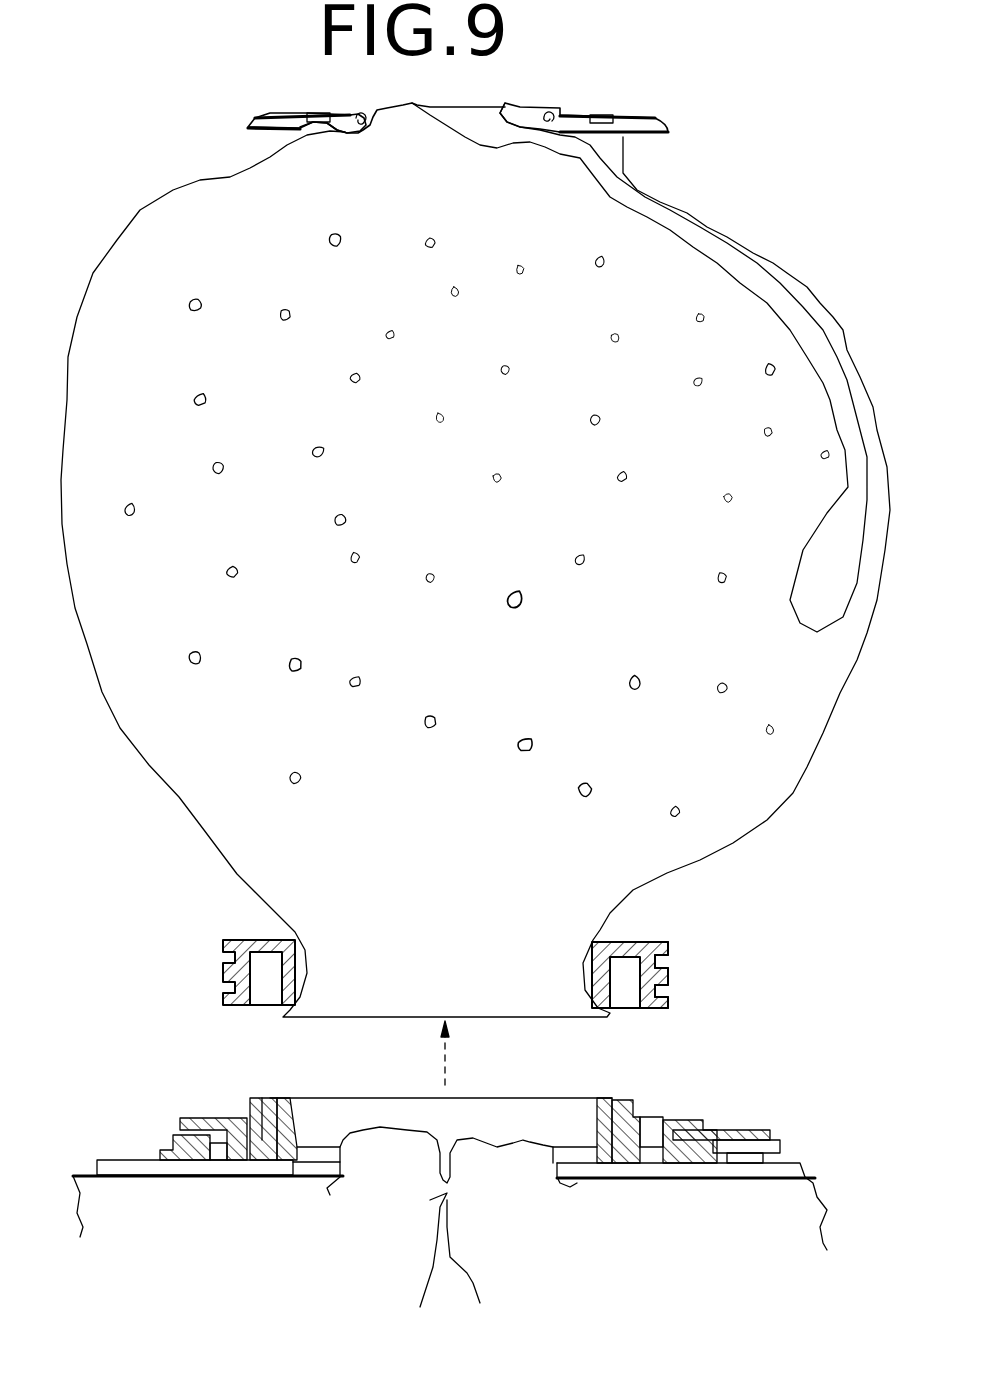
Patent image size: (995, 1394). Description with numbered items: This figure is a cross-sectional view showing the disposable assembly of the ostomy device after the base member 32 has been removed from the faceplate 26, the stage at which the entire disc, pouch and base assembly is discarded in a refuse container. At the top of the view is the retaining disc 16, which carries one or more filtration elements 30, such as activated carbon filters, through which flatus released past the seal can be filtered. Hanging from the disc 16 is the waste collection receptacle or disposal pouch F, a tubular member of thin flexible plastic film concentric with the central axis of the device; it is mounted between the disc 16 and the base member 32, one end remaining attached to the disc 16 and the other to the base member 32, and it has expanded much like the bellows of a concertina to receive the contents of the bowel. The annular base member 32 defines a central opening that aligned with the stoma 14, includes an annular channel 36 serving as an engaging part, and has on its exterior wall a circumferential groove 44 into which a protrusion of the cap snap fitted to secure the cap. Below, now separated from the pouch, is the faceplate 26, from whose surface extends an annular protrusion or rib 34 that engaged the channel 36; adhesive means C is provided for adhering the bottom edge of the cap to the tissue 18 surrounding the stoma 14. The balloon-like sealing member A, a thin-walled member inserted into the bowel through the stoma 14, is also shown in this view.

The stoma 14 is at (523, 1140).
The retaining disc 16 is at (285, 124).
The tissue 18 is at (215, 1197).
The faceplate 26 is at (192, 1150).
The filtration elements 30 is at (320, 113).
The base member 32 is at (686, 954).
The annular protrusion or rib 34 is at (633, 1127).
The annular channel 36 is at (623, 987).
The circumferential groove 44 is at (667, 962).
The sealing member A is at (823, 650).
The adhesive means C is at (810, 1158).
The waste collection receptacle F is at (200, 842).